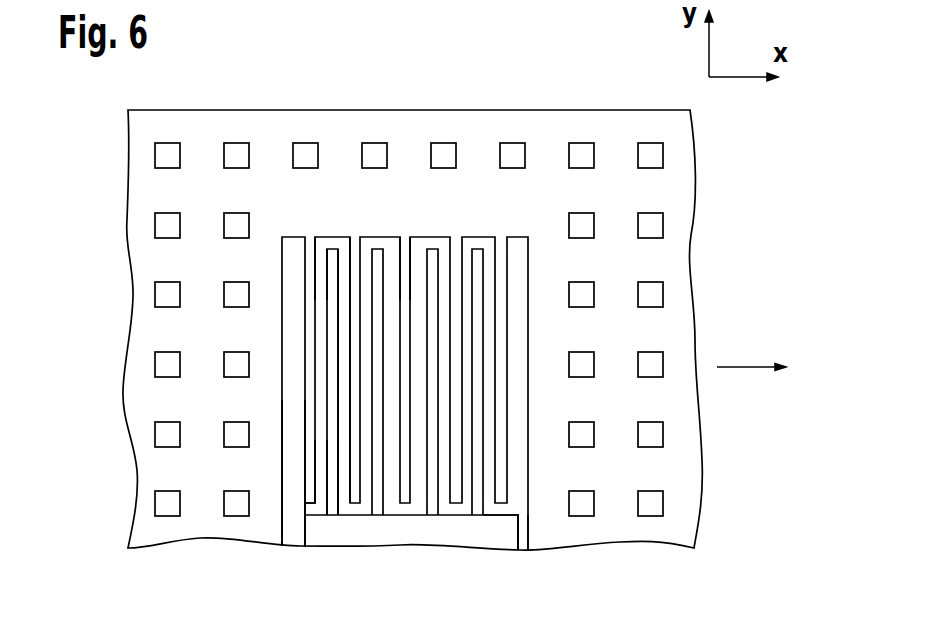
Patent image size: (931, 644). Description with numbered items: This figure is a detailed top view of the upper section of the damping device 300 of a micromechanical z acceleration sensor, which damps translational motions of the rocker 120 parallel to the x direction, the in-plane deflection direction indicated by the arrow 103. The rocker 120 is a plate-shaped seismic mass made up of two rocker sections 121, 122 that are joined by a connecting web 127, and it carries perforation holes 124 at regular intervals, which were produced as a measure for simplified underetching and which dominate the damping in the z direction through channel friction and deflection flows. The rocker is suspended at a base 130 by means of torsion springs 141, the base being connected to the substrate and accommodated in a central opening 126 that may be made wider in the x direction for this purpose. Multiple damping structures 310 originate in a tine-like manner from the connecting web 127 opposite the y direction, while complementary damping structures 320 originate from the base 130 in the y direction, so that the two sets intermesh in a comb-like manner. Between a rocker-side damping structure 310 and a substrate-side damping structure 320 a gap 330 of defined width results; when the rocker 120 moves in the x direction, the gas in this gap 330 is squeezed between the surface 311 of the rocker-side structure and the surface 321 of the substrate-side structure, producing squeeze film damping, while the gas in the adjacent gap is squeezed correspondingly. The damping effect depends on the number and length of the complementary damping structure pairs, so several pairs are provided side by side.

The arrow 103 is at (750, 368).
The rocker 120 is at (700, 521).
The rocker section 121 is at (184, 127).
The rocker section 122 is at (635, 125).
The perforation hole 124 is at (170, 502).
The central opening 126 is at (519, 532).
The connecting web 127 is at (482, 125).
The base 130 is at (500, 532).
The torsion spring 141 is at (412, 283).
The damping device 300 is at (531, 217).
The damping structure 310 is at (312, 410).
The surface 311 is at (325, 473).
The damping structure 320 is at (330, 438).
The surface 321 is at (322, 488).
The gap 330 is at (320, 270).